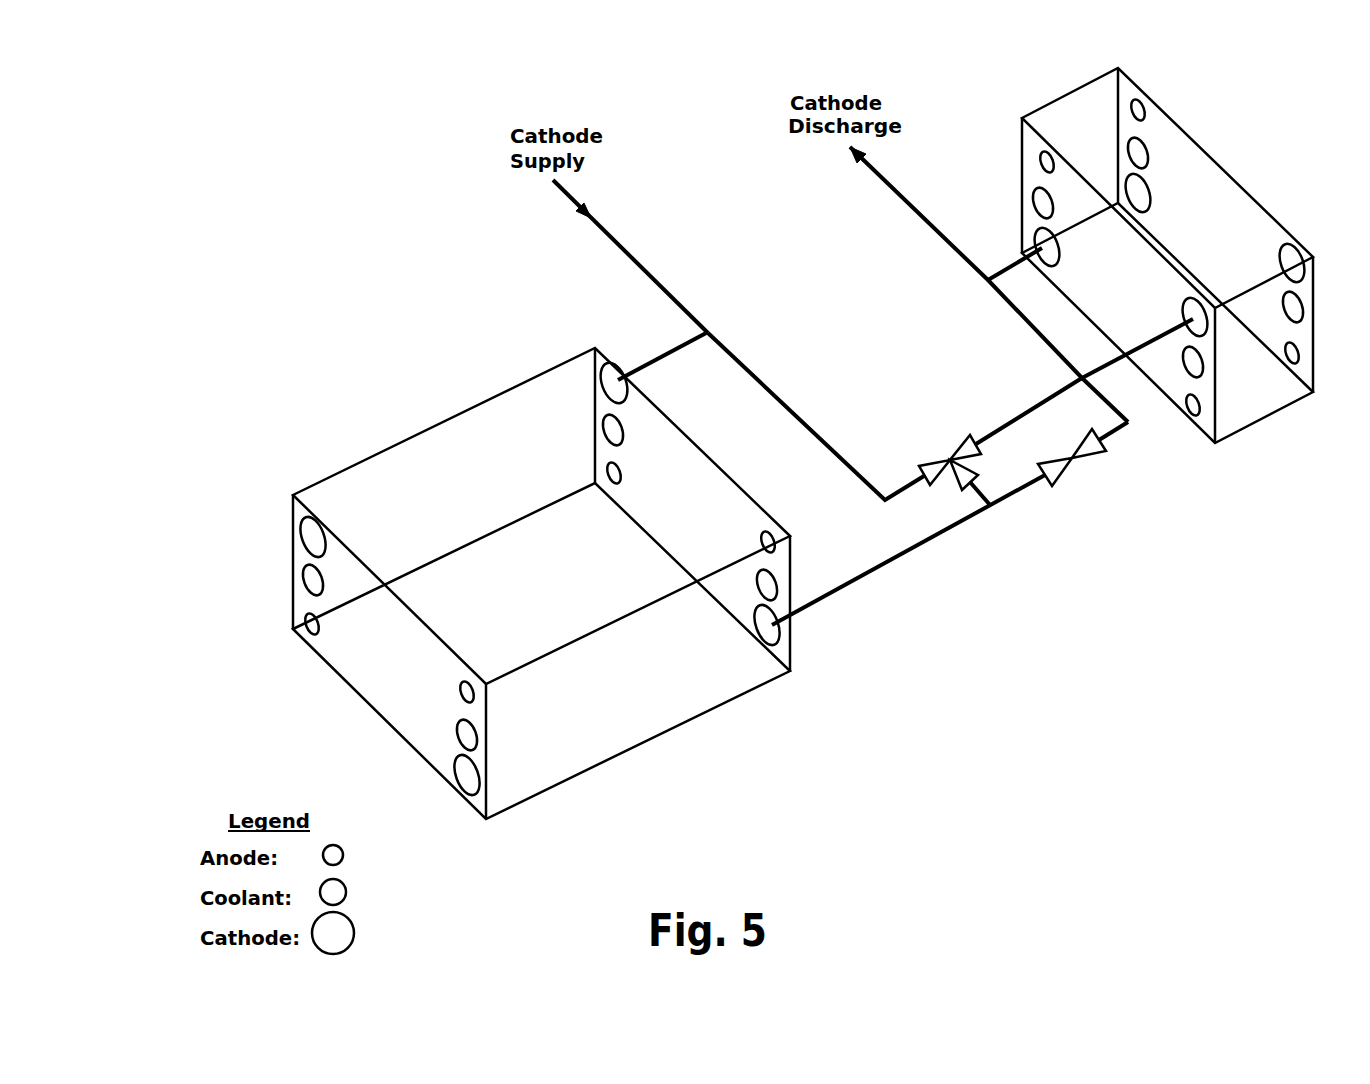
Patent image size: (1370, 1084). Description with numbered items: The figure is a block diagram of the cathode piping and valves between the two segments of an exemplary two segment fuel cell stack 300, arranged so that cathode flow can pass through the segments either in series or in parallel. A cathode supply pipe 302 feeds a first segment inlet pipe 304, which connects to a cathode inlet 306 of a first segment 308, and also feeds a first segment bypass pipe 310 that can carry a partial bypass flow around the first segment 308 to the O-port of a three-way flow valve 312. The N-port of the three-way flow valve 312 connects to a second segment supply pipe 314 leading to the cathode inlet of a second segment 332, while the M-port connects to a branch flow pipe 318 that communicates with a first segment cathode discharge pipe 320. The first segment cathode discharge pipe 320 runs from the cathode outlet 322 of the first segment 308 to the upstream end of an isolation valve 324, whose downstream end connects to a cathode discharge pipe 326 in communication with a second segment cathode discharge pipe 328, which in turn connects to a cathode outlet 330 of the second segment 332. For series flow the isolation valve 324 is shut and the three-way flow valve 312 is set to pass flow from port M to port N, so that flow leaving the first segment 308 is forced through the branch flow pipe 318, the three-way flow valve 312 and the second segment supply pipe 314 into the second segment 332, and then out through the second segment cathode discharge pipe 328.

The fuel cell stack 300 is at (466, 178).
The cathode supply pipe 302 is at (622, 242).
The first segment inlet pipe 304 is at (665, 358).
The cathode inlet 306 is at (618, 383).
The first segment 308 is at (373, 493).
The first segment bypass pipe 310 is at (810, 422).
The three-way flow valve 312 is at (948, 458).
The second segment supply pipe 314 is at (1015, 420).
The branch flow pipe 318 is at (980, 498).
The first segment cathode discharge pipe 320 is at (875, 570).
The cathode outlet port 322 is at (780, 638).
The isolation valve 324 is at (1062, 475).
The cathode discharge pipe 326 is at (1112, 435).
The second segment cathode discharge pipe 328 is at (1002, 273).
The cathode outlet 330 is at (1033, 237).
The second segment 332 is at (1060, 112).